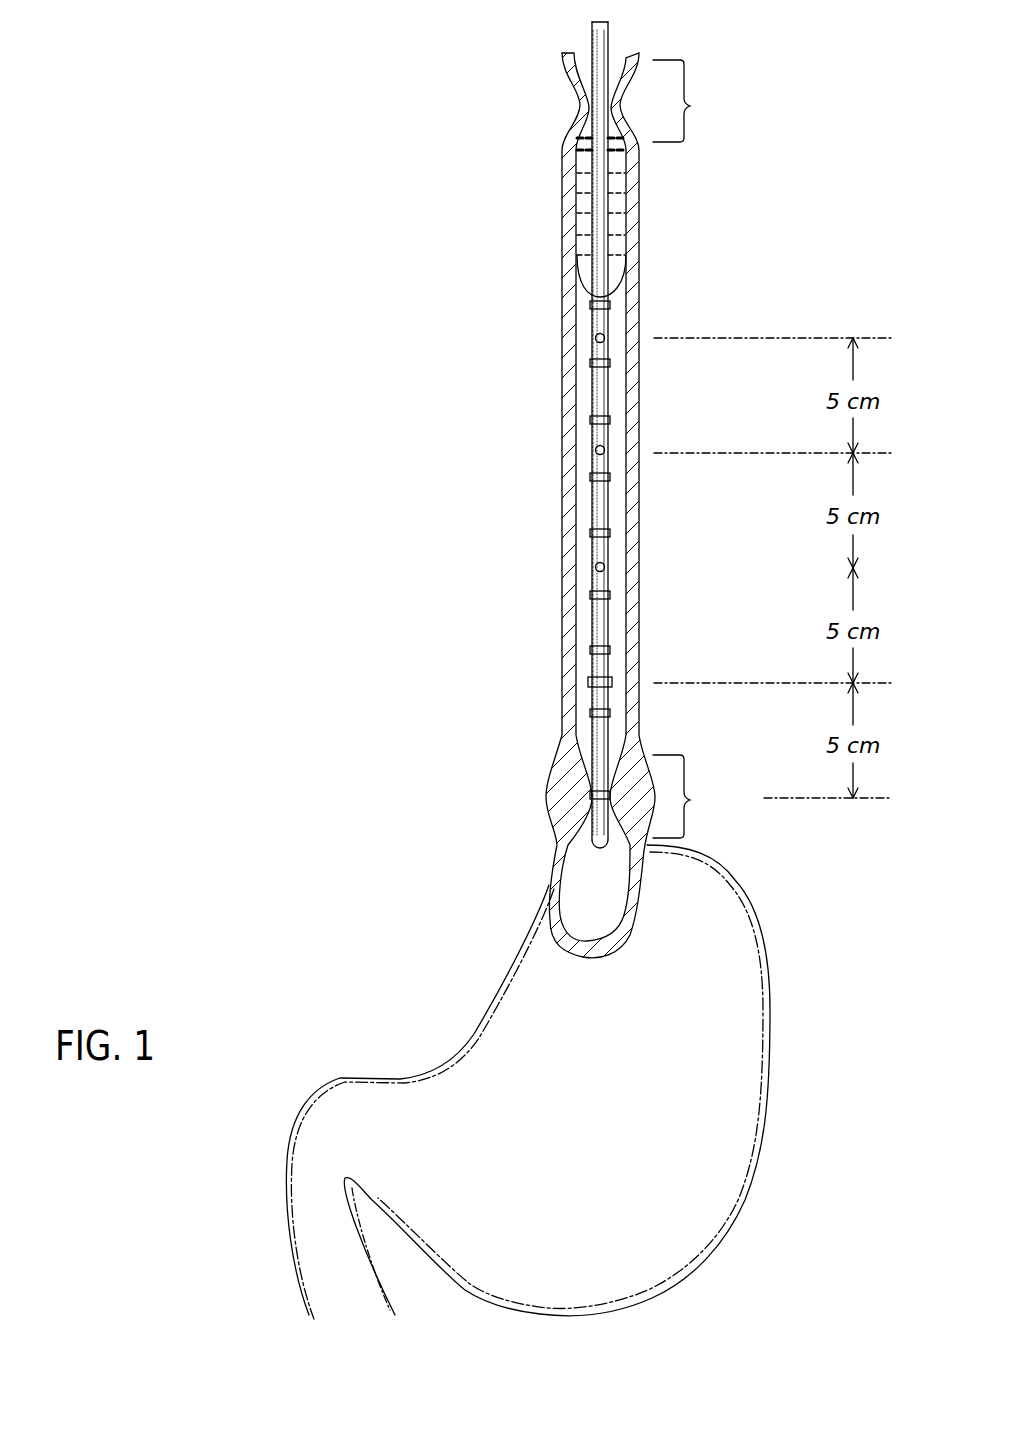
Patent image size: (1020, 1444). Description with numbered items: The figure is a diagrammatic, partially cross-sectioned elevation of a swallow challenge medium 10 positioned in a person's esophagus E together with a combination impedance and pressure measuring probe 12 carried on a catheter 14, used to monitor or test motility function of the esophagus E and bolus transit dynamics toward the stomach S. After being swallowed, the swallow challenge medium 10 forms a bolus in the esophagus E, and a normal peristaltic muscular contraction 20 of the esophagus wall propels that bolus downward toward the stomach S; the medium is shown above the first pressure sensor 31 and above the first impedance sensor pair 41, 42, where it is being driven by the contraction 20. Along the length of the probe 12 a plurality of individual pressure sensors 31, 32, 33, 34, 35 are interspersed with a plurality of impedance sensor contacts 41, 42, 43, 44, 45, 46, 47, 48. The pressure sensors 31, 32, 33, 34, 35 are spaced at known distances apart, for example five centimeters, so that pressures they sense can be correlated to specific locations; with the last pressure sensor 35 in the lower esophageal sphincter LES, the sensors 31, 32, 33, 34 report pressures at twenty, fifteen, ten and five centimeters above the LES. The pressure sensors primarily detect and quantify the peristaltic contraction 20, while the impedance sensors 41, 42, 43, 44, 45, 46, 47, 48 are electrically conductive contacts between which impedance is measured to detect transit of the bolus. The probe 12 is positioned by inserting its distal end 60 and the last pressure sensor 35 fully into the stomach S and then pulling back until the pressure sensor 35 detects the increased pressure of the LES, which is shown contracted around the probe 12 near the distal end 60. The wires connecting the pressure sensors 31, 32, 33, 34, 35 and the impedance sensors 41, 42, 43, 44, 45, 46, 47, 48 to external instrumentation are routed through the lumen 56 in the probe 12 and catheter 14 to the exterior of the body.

The swallow challenge medium 10 is at (640, 210).
The combination impedance and pressure measuring probe 12 is at (590, 512).
The catheter 14 is at (590, 40).
The peristaltic muscular contraction 20 is at (690, 106).
The pressure sensor 31 is at (577, 333).
The pressure sensor 32 is at (580, 450).
The pressure sensor 33 is at (592, 567).
The pressure sensor 34 is at (566, 682).
The pressure sensor 35 is at (590, 795).
The impedance sensor contact 41 is at (562, 308).
The impedance sensor contact 42 is at (566, 365).
The impedance sensor contact 43 is at (566, 420).
The impedance sensor contact 44 is at (564, 477).
The impedance sensor contact 45 is at (564, 533).
The impedance sensor contact 46 is at (564, 595).
The impedance sensor contact 47 is at (564, 650).
The impedance sensor contact 48 is at (564, 713).
The lumen 56 is at (606, 24).
The distal end 60 is at (568, 846).
The esophagus E is at (556, 460).
The stomach S is at (468, 1030).
The lower esophageal sphincter LES is at (690, 800).